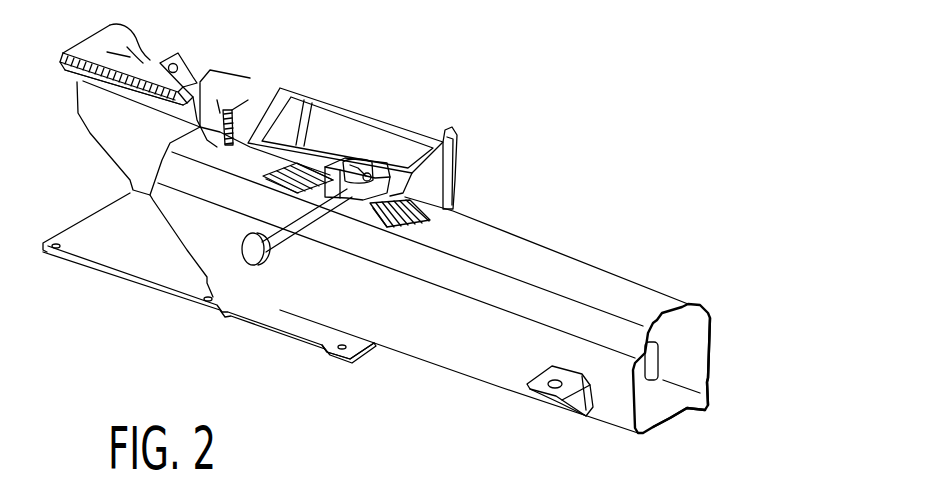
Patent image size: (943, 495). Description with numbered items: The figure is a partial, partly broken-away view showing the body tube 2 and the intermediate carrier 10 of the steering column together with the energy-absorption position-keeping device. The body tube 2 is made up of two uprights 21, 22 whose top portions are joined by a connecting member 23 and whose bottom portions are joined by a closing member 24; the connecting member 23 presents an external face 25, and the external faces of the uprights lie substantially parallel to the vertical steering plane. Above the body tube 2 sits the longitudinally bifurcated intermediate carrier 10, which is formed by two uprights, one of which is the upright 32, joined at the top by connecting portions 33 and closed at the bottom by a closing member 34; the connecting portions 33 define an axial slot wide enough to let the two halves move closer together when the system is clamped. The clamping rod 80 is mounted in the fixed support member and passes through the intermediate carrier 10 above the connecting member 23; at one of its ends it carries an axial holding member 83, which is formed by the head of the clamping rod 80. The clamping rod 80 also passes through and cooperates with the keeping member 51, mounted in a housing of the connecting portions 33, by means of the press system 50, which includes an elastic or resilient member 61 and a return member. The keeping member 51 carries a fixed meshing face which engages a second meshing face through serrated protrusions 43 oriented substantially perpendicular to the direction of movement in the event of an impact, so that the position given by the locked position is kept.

The body tube 2 is at (427, 277).
The intermediate carrier 10 is at (364, 116).
The upright 21 is at (625, 403).
The upright 22 is at (712, 353).
The connecting member 23 is at (642, 292).
The closing member 24 is at (670, 417).
The external face 25 is at (530, 263).
The upright 32 is at (453, 210).
The connecting portions 33 is at (444, 170).
The closing member 34 is at (364, 356).
The serrated protrusions 43 is at (425, 232).
The press system 50 is at (368, 112).
The keeping member 51 is at (368, 176).
The elastic or resilient member 61 is at (358, 170).
The clamping rod 80 is at (209, 310).
The axial holding member 83 is at (249, 247).